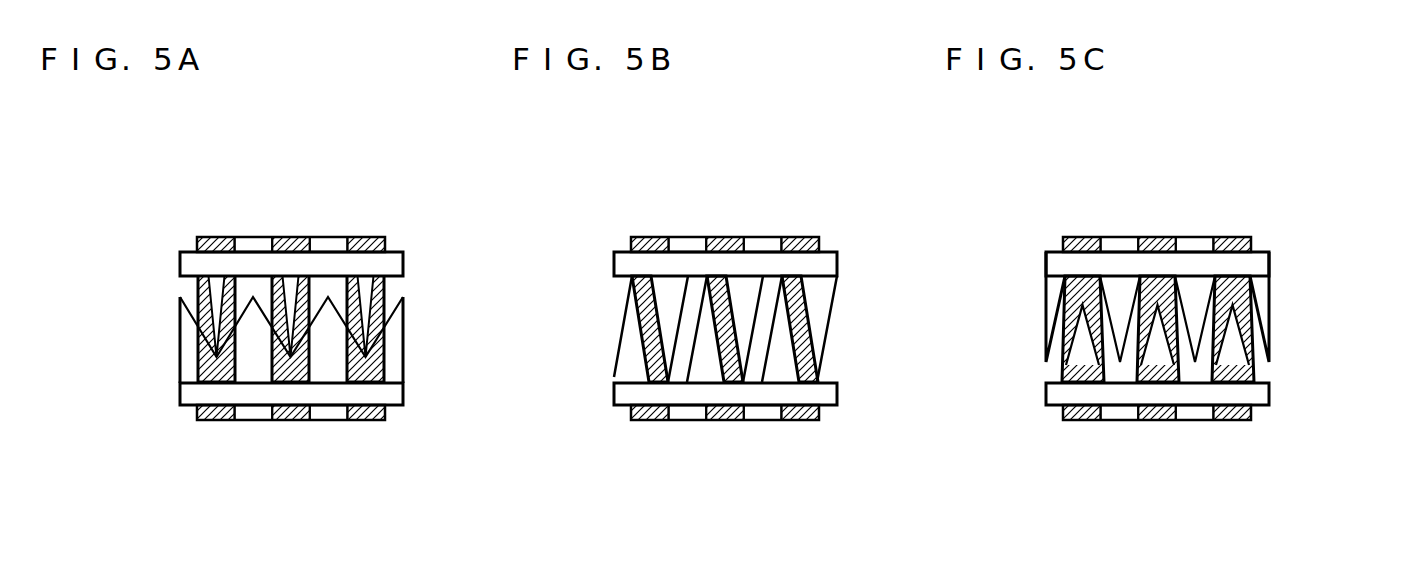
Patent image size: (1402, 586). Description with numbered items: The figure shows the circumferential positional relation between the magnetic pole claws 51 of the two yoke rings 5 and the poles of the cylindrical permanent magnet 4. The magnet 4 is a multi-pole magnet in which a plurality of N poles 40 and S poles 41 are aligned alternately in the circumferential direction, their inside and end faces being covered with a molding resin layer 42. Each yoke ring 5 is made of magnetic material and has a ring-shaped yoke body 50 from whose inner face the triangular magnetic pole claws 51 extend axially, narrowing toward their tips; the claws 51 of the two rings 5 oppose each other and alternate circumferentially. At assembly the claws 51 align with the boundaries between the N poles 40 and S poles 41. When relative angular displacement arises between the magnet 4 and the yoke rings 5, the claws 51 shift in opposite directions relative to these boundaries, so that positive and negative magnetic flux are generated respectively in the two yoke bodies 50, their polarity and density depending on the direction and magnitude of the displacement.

In FIG. 5A, the cylindrical permanent magnet 4 is at (319, 421).
In FIG. 5B, the cylindrical permanent magnet 4 is at (725, 463).
In FIG. 5C, the cylindrical permanent magnet 4 is at (1157, 463).
In FIG. 5A, the N pole 40 is at (207, 237).
In FIG. 5B, the N pole 40 is at (733, 289).
In FIG. 5C, the N pole 40 is at (1165, 289).
In FIG. 5A, the S pole 41 is at (250, 237).
In FIG. 5B, the S pole 41 is at (726, 279).
In FIG. 5C, the S pole 41 is at (1158, 279).
In FIG. 5A, the molding resin layer 42 is at (267, 237).
In FIG. 5B, the molding resin layer 42 is at (725, 190).
In FIG. 5C, the molding resin layer 42 is at (1157, 190).
In FIG. 5A, the yoke ring 5 is at (93, 235).
In FIG. 5B, the yoke ring 5 is at (725, 325).
In FIG. 5C, the yoke ring 5 is at (1157, 325).
In FIG. 5A, the yoke body 50 is at (187, 263).
In FIG. 5B, the yoke body 50 is at (723, 324).
In FIG. 5C, the yoke body 50 is at (1155, 324).
In FIG. 5A, the magnetic pole claw 51 is at (215, 296).
In FIG. 5B, the magnetic pole claw 51 is at (723, 329).
In FIG. 5C, the magnetic pole claw 51 is at (1155, 317).